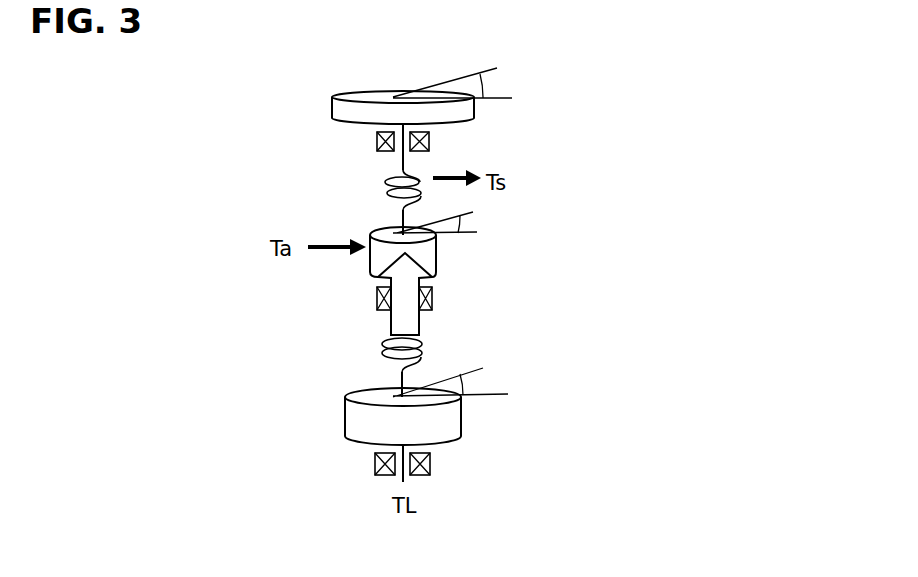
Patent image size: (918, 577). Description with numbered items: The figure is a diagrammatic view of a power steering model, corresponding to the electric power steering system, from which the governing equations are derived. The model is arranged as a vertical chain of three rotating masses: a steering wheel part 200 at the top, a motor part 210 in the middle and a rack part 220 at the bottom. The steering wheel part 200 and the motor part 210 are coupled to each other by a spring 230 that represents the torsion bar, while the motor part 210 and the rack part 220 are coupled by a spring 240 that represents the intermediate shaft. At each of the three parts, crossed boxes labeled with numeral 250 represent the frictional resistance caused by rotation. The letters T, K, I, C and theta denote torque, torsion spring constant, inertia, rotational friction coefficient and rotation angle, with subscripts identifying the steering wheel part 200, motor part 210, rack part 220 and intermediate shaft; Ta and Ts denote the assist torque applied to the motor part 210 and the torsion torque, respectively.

The steering wheel part 200 is at (474, 105).
The motor part 210 is at (436, 253).
The rack part 220 is at (461, 417).
The spring 230 is at (386, 197).
The spring 240 is at (422, 340).
The frictional resistance 250 is at (429, 127).